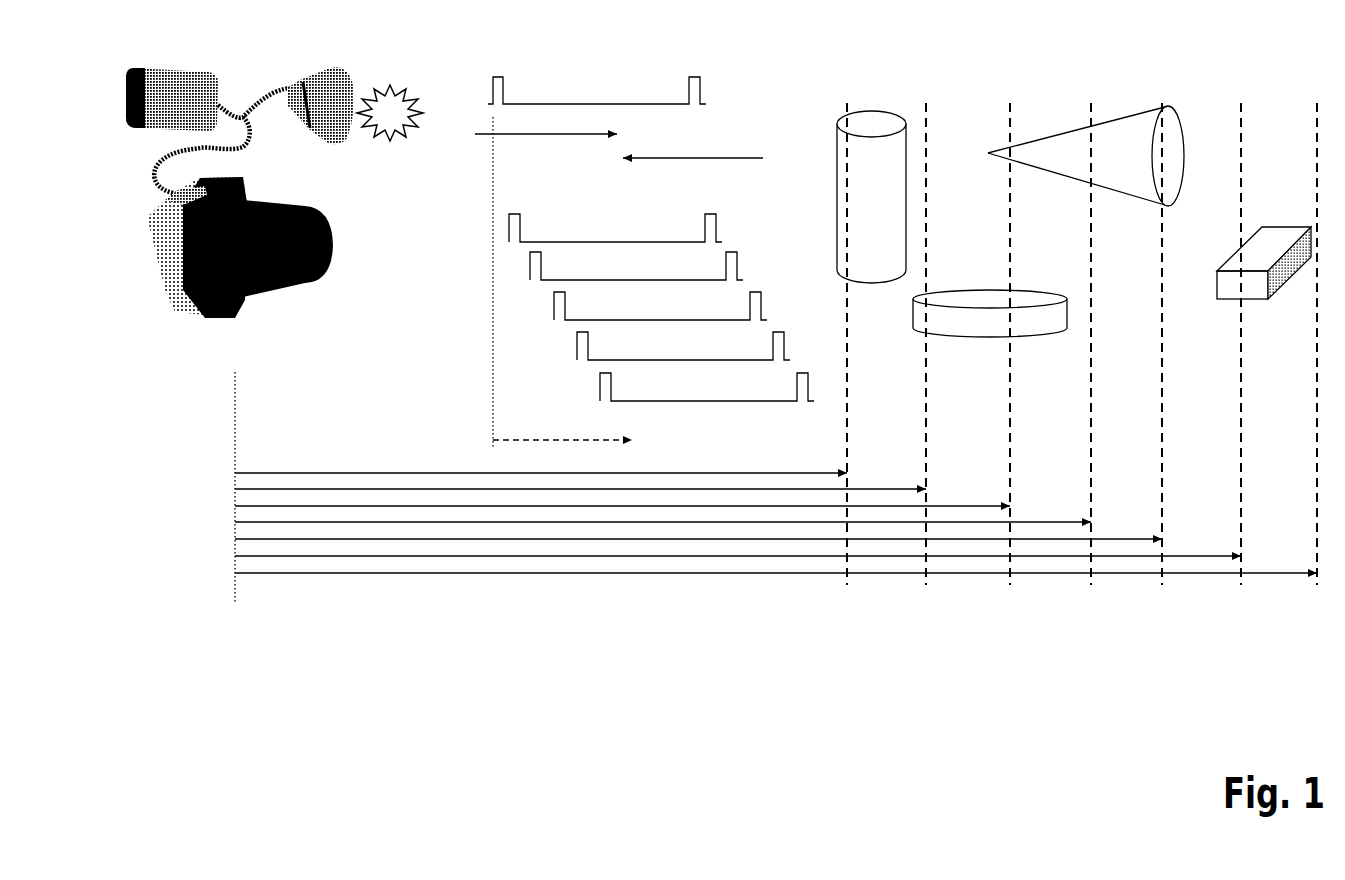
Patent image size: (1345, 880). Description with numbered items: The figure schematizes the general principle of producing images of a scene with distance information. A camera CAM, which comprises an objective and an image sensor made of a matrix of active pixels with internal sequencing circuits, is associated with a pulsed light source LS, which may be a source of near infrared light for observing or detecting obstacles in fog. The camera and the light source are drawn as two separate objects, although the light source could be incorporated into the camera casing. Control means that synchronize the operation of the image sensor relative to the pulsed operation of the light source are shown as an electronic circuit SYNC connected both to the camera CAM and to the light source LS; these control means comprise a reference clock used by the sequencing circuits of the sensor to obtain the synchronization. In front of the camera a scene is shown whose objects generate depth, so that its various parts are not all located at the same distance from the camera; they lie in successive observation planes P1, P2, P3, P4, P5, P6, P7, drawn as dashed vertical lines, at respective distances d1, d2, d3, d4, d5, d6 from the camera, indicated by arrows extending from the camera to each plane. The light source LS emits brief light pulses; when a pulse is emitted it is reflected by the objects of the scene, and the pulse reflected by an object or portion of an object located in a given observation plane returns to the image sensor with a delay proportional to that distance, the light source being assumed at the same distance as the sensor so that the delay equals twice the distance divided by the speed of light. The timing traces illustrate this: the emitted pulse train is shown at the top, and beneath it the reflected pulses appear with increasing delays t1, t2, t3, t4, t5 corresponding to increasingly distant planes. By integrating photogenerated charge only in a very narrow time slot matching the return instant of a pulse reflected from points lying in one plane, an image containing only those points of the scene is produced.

The electronic circuit SYNC is at (202, 132).
The pulsed light source LS is at (338, 140).
The camera CAM is at (242, 318).
The delay t1 is at (508, 248).
The delay t2 is at (529, 286).
The delay t3 is at (553, 326).
The delay t4 is at (576, 366).
The delay t5 is at (599, 407).
The distance d1 is at (541, 458).
The distance d2 is at (580, 474).
The distance d3 is at (622, 491).
The distance d4 is at (663, 507).
The distance d5 is at (698, 524).
The distance d6 is at (738, 541).
The observation plane P1 is at (840, 378).
The observation plane P2 is at (926, 378).
The observation plane P3 is at (1010, 378).
The observation plane P4 is at (1089, 378).
The observation plane P5 is at (1160, 378).
The observation plane P6 is at (1237, 378).
The observation plane P7 is at (1315, 378).